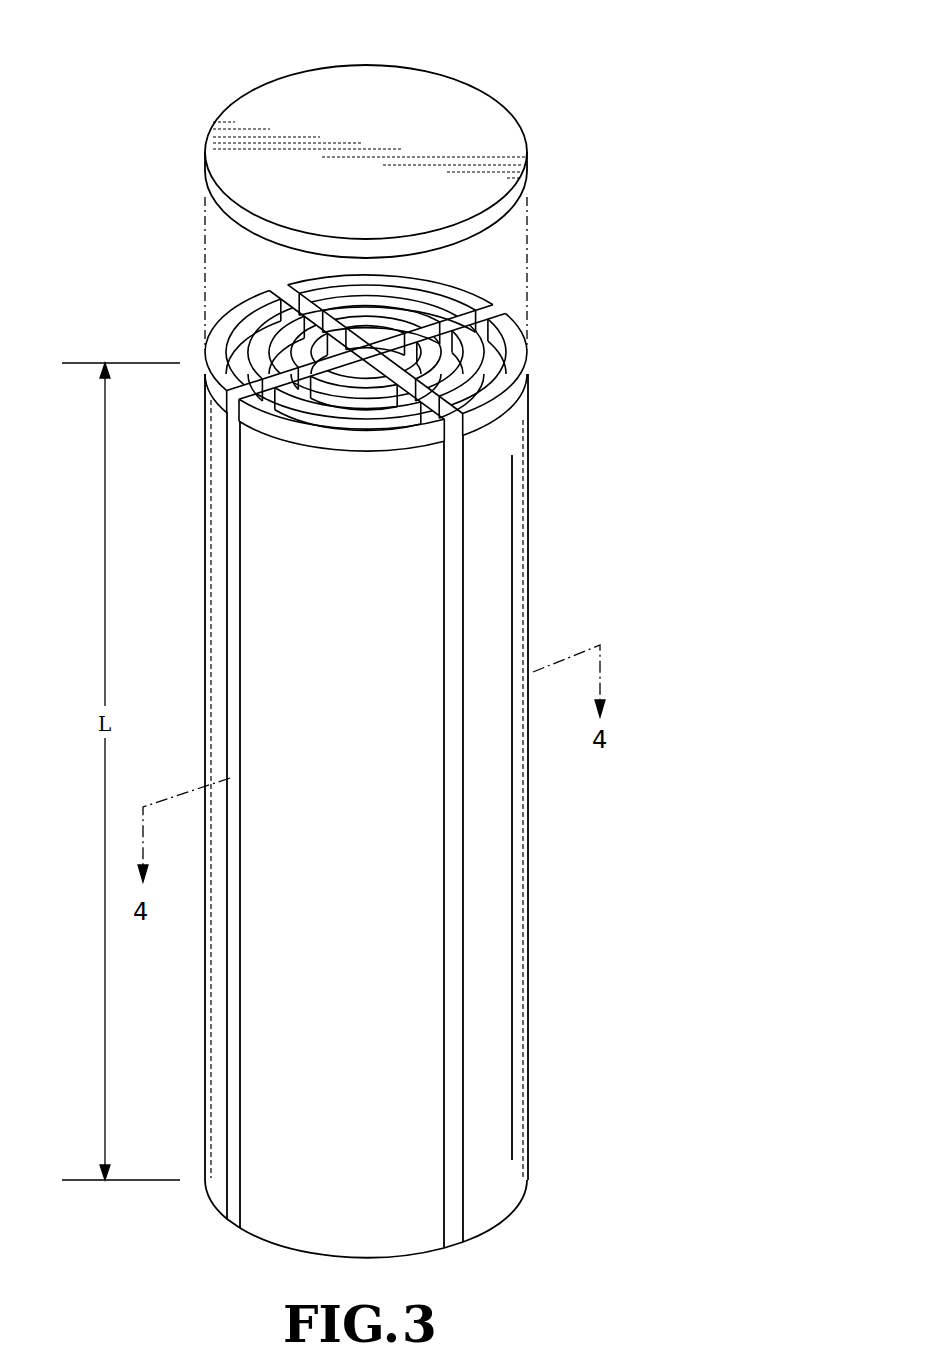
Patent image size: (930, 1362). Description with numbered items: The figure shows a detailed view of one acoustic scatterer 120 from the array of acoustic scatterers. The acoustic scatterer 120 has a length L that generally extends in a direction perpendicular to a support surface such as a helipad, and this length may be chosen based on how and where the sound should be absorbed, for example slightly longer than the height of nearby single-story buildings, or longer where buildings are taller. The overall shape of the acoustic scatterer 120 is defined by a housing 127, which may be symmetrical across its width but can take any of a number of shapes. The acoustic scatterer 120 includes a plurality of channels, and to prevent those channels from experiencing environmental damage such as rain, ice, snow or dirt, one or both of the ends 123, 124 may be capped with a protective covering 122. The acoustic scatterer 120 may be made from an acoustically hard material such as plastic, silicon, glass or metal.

The protective covering 122 is at (432, 117).
The end 123 is at (498, 396).
The housing 127 is at (490, 615).
The acoustic scatterer 120 is at (487, 975).
The end 124 is at (493, 1200).